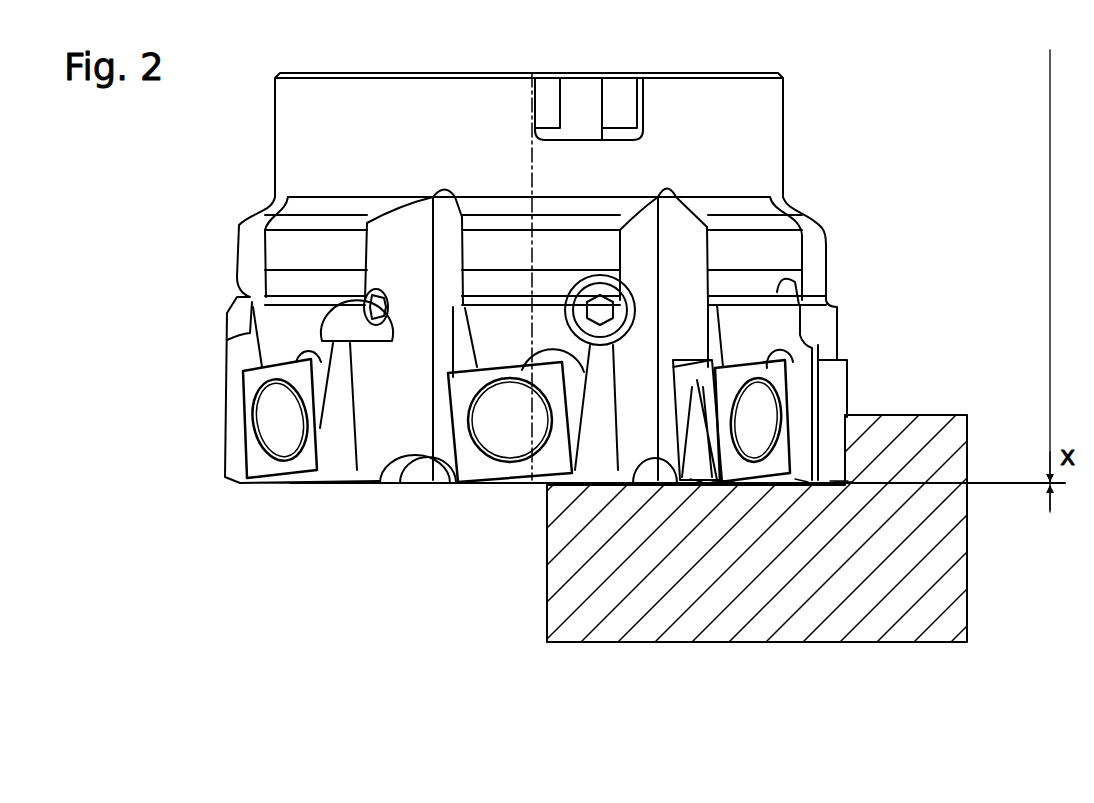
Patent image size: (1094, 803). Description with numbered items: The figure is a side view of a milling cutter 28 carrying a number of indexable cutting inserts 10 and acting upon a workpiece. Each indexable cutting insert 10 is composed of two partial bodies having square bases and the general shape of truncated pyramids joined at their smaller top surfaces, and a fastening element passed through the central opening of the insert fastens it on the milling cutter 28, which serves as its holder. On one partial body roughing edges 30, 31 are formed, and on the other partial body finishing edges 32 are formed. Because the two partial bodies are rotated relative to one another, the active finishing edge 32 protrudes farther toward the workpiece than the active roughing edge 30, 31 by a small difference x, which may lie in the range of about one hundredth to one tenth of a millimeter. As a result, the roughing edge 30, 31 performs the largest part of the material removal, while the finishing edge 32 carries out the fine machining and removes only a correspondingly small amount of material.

The milling cutter 28 is at (770, 137).
The indexable cutting insert 10 is at (302, 457).
The roughing edge 30 is at (725, 490).
The roughing edge 31 is at (784, 481).
The finishing edge 32 is at (697, 490).